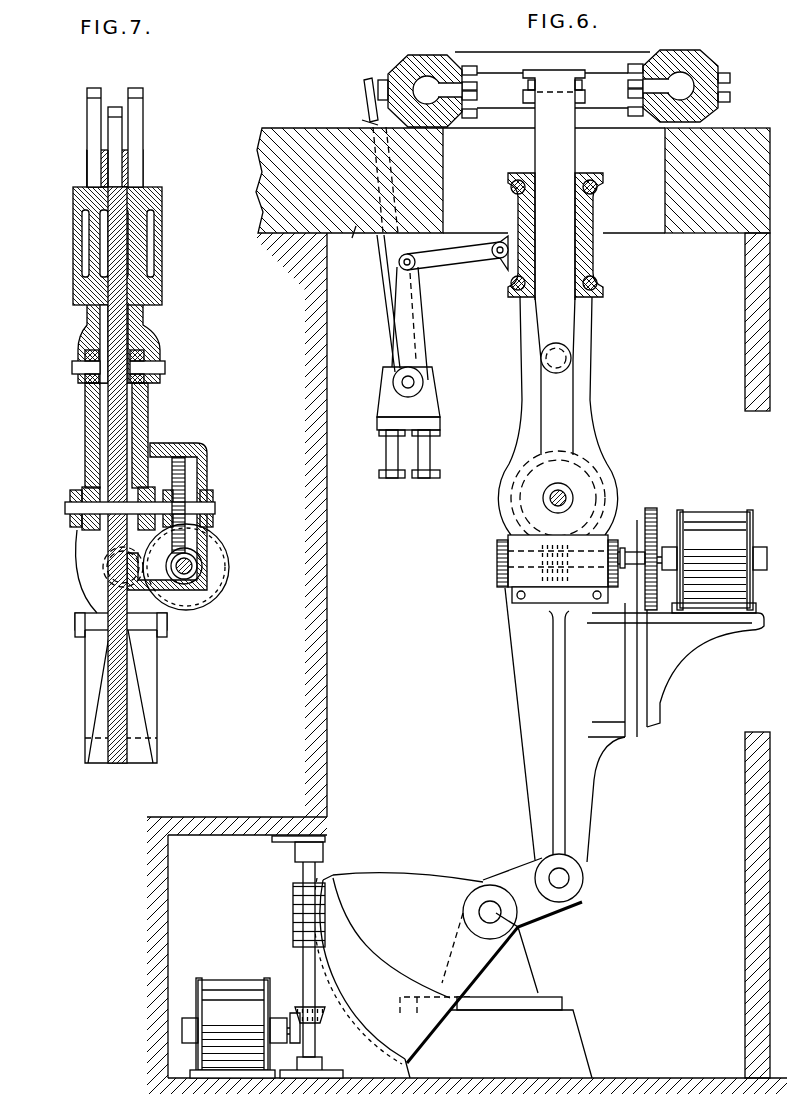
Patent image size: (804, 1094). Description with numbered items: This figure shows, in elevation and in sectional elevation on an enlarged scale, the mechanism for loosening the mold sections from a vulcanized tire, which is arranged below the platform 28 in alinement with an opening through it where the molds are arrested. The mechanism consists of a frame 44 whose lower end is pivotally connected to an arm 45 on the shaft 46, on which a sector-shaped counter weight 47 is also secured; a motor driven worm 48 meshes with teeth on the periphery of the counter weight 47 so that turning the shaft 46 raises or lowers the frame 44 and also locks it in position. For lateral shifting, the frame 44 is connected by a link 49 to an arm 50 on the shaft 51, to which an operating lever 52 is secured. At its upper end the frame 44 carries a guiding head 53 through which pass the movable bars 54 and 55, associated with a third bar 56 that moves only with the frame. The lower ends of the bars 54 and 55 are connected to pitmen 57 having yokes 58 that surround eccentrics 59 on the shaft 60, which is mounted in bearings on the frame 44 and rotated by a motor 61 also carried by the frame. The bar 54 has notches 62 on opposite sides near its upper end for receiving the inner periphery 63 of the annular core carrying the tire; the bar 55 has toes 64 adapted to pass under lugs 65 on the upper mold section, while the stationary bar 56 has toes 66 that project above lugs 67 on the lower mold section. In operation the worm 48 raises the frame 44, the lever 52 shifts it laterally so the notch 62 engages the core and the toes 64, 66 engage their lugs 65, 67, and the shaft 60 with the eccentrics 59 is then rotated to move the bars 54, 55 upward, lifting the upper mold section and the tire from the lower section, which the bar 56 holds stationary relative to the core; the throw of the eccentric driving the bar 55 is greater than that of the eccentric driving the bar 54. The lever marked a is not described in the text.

In FIG. 6, the platform 28 is at (348, 249).
In FIG. 7, the frame 44 is at (114, 437).
In FIG. 6, the frame 44 is at (596, 385).
In FIG. 6, the arm 45 is at (557, 911).
In FIG. 6, the shaft 46 is at (518, 927).
In FIG. 6, the counter weight 47 is at (412, 880).
In FIG. 6, the worm 48 is at (293, 900).
In FIG. 6, the link 49 is at (483, 258).
In FIG. 6, the arm 50 is at (425, 318).
In FIG. 6, the shaft 51 is at (393, 383).
In FIG. 6, the operating lever 52 is at (386, 293).
In FIG. 7, the guiding head 53 is at (162, 266).
In FIG. 6, the guiding head 53 is at (596, 217).
In FIG. 7, the bar 54 is at (130, 160).
In FIG. 6, the bar 54 is at (567, 147).
In FIG. 7, the bar 55 is at (87, 150).
In FIG. 7, the bar 56 is at (115, 167).
In FIG. 7, the pitmen 57 is at (85, 405).
In FIG. 6, the pitmen 57 is at (566, 418).
In FIG. 7, the yokes 58 is at (80, 548).
In FIG. 7, the eccentrics 59 is at (152, 487).
In FIG. 6, the eccentrics 59 is at (500, 528).
In FIG. 7, the shaft 60 is at (65, 506).
In FIG. 6, the shaft 60 is at (562, 495).
In FIG. 6, the motor 61 is at (690, 520).
In FIG. 7, the notches 62 is at (144, 97).
In FIG. 6, the notches 62 is at (528, 90).
In FIG. 6, the inner periphery 63 is at (472, 90).
In FIG. 7, the toes 64 is at (87, 93).
In FIG. 6, the lugs 65 is at (467, 65).
In FIG. 7, the toes 66 is at (114, 106).
In FIG. 6, the lugs 67 is at (467, 118).
In FIG. 6, the lever a is at (381, 78).